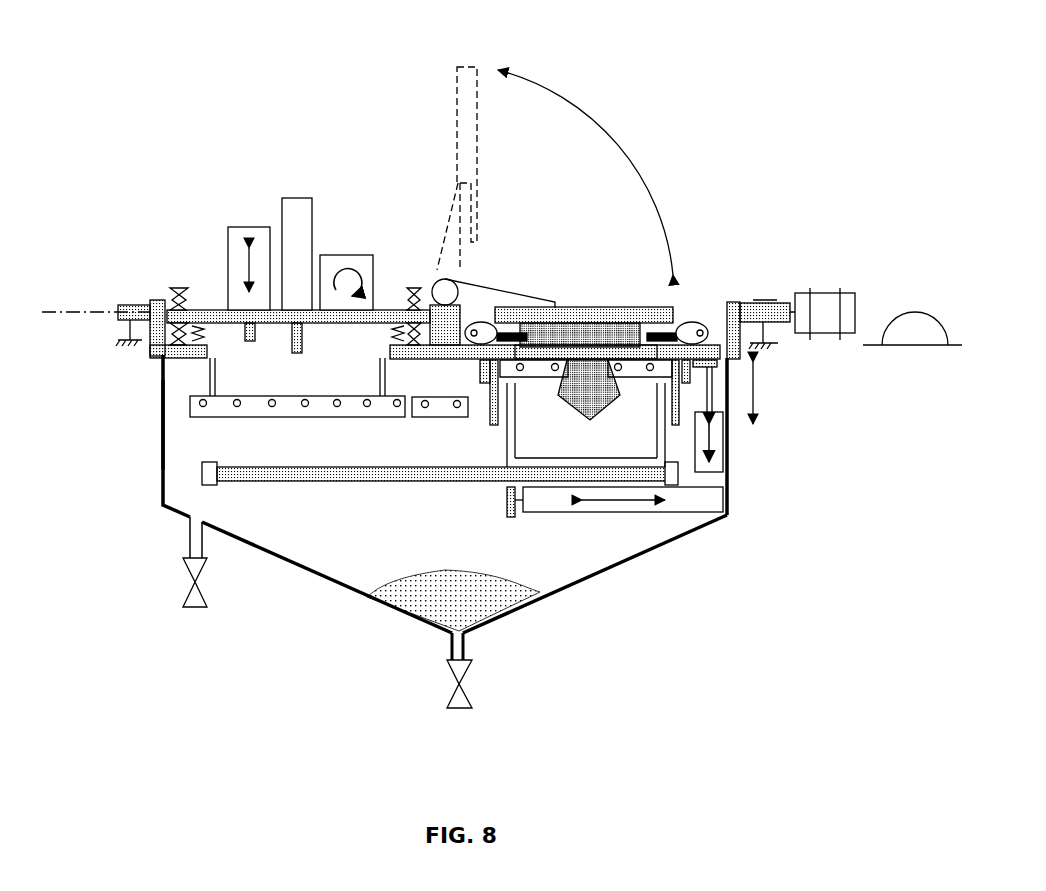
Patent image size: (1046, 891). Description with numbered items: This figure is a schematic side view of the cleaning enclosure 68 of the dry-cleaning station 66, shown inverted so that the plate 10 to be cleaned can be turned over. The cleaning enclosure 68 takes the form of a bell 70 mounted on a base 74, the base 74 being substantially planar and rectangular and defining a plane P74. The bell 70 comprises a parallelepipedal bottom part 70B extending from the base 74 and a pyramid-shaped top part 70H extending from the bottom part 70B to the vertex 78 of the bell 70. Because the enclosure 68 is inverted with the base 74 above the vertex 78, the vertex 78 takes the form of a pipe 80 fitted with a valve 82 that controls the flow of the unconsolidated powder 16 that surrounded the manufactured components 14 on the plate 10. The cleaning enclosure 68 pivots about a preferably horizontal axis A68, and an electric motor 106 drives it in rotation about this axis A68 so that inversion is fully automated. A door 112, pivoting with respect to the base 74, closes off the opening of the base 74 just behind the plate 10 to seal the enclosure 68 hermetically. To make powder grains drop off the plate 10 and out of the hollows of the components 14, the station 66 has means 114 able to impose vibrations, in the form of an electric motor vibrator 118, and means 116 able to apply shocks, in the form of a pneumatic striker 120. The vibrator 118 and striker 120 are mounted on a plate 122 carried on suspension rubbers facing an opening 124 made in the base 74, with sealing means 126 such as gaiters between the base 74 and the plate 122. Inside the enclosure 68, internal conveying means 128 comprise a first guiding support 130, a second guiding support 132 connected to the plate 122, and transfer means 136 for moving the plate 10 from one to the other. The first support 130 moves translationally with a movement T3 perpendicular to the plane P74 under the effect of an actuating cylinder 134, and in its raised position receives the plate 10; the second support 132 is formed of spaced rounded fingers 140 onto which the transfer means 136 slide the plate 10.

The dry-cleaning station 66 is at (222, 128).
The means able to cause shocks 116 is at (250, 224).
The means able to impose vibrations 114 is at (347, 250).
The electric motor vibrator 118 is at (374, 262).
The pneumatic striker 120 is at (228, 250).
The plate 122 is at (209, 311).
The axis A68 is at (56, 312).
The door 112 is at (549, 307).
The plate 10 is at (607, 336).
The base 74 is at (735, 306).
The electric motor 106 is at (821, 300).
The plane of the base P74 is at (912, 330).
The translational movement T3 is at (776, 393).
The actuating cylinder 134 is at (720, 452).
The first guiding support 130 is at (635, 376).
The manufactured components 14 is at (573, 404).
The transfer means 136 is at (504, 441).
The second guiding support 132 is at (257, 410).
The fingers 140 is at (334, 404).
The bottom part 70B is at (158, 390).
The opening 124 is at (388, 352).
The sealing means 126 is at (200, 340).
The internal means of conveying a plate 128 is at (402, 520).
The unconsolidated powder 16 is at (488, 588).
The cleaning enclosure 68 is at (282, 562).
The bell 70 is at (333, 582).
The pipe 80 is at (468, 644).
The vertex 78 is at (446, 650).
The valve 82 is at (468, 696).
The top part 70H is at (643, 560).